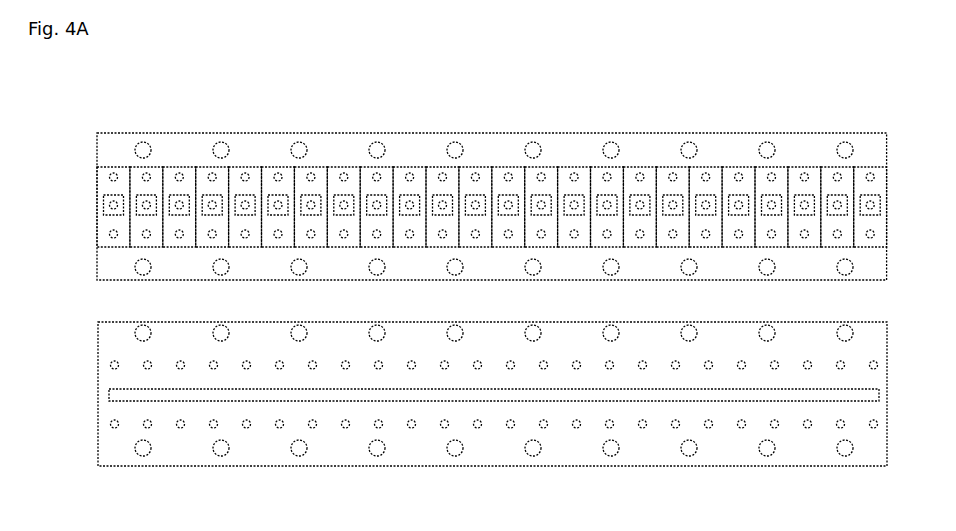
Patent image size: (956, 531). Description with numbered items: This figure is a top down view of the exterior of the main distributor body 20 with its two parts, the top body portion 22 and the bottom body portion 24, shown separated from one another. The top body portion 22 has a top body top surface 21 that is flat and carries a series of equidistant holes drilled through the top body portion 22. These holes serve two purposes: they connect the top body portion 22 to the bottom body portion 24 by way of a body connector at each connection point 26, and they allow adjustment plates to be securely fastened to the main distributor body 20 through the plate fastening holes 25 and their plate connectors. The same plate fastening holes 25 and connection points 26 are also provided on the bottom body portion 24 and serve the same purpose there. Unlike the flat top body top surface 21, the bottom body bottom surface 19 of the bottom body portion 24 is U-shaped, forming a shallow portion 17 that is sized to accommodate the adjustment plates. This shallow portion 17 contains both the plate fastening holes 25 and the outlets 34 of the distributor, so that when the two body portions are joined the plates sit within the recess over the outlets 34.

The shallow portion 17 is at (897, 167).
The bottom body bottom surface 19 is at (877, 256).
The main distributor body 20 is at (487, 285).
The top body top surface 21 is at (875, 452).
The top body portion 22 is at (92, 312).
The bottom body portion 24 is at (92, 123).
The plate fastening holes 25 is at (343, 228).
The connection point 26 is at (540, 274).
The outlets 34 is at (605, 201).